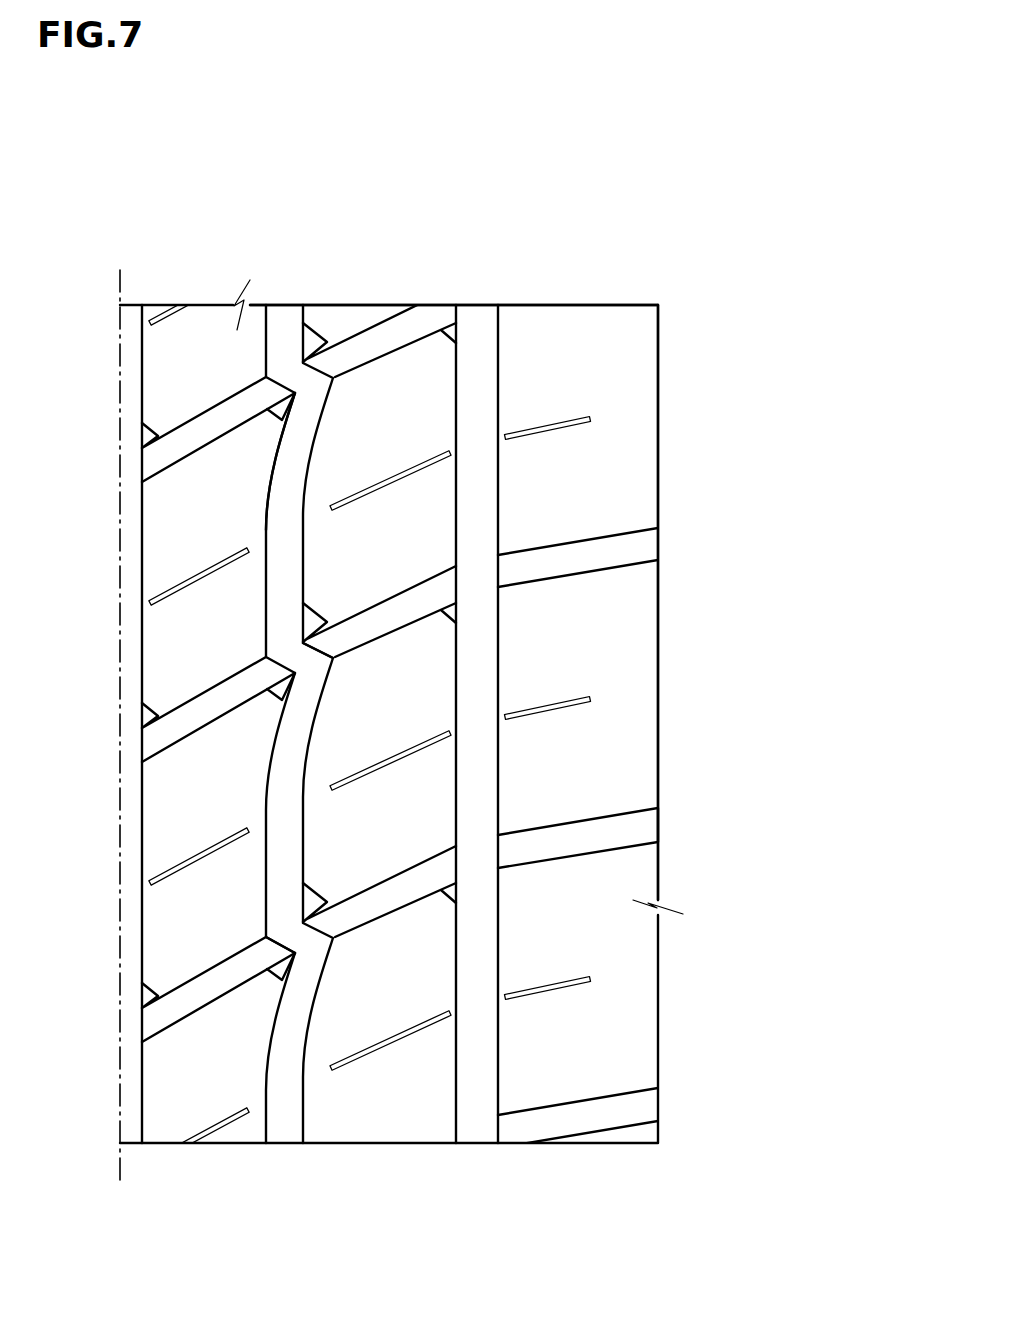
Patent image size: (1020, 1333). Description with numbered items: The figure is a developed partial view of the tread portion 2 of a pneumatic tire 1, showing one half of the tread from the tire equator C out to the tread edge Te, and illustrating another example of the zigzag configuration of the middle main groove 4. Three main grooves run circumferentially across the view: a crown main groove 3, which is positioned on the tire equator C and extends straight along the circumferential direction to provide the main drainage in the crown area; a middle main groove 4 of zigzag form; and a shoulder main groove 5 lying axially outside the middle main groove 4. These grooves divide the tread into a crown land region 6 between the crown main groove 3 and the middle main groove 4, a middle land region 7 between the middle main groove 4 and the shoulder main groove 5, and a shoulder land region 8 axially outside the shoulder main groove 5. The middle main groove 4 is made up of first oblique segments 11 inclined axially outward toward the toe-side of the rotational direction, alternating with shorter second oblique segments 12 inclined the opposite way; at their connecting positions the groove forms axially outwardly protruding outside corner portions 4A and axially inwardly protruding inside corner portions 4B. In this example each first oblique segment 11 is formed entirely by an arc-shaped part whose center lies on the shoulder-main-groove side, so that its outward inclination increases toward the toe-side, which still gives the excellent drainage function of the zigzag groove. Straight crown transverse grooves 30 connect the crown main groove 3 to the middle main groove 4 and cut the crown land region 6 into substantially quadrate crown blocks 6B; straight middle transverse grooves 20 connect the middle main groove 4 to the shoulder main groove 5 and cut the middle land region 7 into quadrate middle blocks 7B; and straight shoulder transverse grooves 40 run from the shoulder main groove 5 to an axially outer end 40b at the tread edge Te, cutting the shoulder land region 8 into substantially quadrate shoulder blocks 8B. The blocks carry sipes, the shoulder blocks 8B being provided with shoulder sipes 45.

The pneumatic tire 1 is at (643, 253).
The tread portion 2 is at (413, 267).
The crown main groove 3 is at (132, 337).
The middle main groove 4 is at (288, 337).
The outside corner portion 4A is at (315, 958).
The inside corner portion 4B is at (283, 918).
The shoulder main groove 5 is at (476, 327).
The crown land region 6 is at (227, 759).
The crown block 6B is at (227, 759).
The middle land region 7 is at (541, 768).
The middle block 7B is at (541, 678).
The shoulder land region 8 is at (647, 834).
The shoulder block 8B is at (647, 782).
The first oblique segment 11 is at (287, 477).
The second oblique segment 12 is at (299, 658).
The middle transverse groove 20 is at (422, 614).
The crown transverse groove 30 is at (207, 985).
The shoulder transverse groove 40 is at (583, 552).
The axially outer end of shoulder transverse groove 40b is at (658, 825).
The shoulder sipe 45 is at (550, 990).
The tread edge Te is at (658, 617).
The tire equator C is at (118, 710).